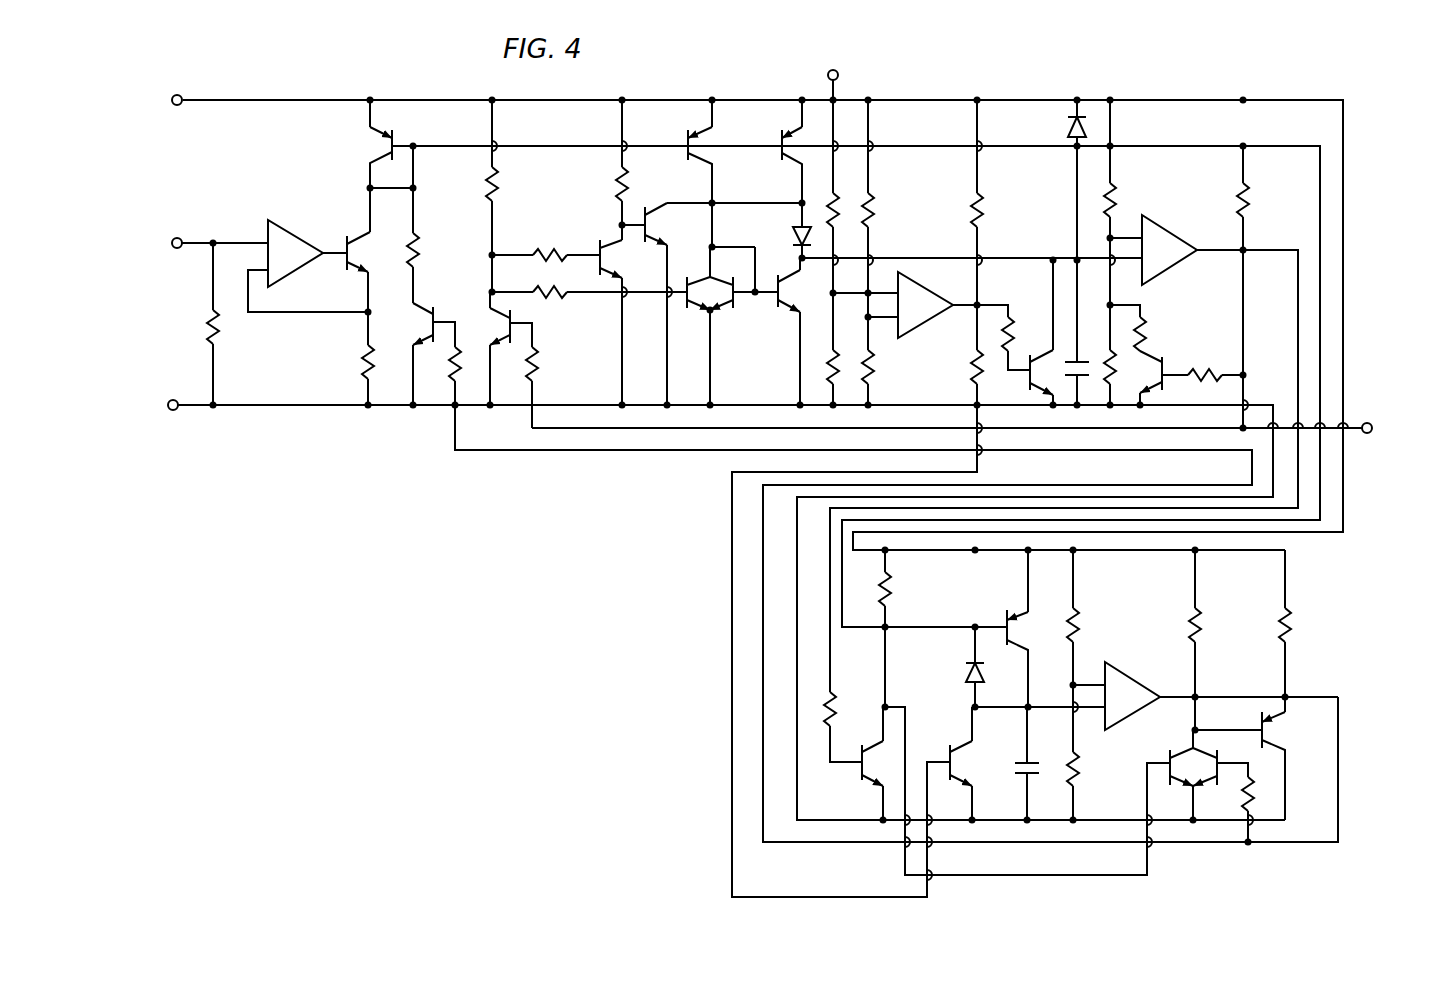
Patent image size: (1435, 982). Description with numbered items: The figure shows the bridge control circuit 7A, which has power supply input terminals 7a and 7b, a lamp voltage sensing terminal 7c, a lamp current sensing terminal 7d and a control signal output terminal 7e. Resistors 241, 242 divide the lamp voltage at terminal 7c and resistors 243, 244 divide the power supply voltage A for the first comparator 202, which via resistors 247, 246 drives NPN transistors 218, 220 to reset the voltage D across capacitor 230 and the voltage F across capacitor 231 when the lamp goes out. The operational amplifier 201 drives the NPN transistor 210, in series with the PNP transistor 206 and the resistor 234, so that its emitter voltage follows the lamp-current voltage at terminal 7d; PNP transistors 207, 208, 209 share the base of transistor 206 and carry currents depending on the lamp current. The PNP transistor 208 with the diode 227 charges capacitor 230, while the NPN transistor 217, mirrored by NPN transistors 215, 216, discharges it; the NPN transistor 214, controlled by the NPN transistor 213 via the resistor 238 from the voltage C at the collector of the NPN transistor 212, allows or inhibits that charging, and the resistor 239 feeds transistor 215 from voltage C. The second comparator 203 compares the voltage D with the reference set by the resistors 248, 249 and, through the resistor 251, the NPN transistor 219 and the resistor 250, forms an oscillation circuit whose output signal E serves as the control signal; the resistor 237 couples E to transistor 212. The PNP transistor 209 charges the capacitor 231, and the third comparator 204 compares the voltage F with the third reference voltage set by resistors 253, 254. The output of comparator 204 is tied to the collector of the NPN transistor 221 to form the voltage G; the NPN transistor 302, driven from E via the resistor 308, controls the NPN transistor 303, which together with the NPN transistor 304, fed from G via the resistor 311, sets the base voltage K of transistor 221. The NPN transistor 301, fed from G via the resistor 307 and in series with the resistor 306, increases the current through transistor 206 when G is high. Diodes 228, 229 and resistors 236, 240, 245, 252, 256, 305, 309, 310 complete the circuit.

The power supply input terminal 7a is at (176, 94).
The power supply input terminal 7b is at (172, 399).
The lamp voltage sensing terminal 7c is at (841, 76).
The lamp current sensing terminal 7d is at (176, 239).
The control signal output terminal 7e is at (1366, 419).
The bridge control circuit 7A is at (1046, 87).
The power supply voltage A is at (303, 94).
The voltage at collector of NPN transistor 212 C is at (496, 292).
The voltage across capacitor 230 D is at (1053, 259).
The output signal of second comparator E is at (1250, 247).
The voltage across capacitor 231 F is at (1033, 700).
The voltage at junction of third comparator output and collector of transistor 221 G is at (1292, 697).
The base voltage of NPN transistor 221 K is at (1202, 721).
The operational amplifier 201 is at (294, 223).
The first comparator 202 is at (928, 272).
The second comparator 203 is at (1181, 228).
The third comparator 204 is at (1137, 677).
The PNP transistor 206 is at (400, 121).
The PNP transistor 207 is at (678, 128).
The PNP transistor 208 is at (772, 128).
The PNP transistor 209 is at (1003, 610).
The NPN transistor 210 is at (338, 242).
The NPN transistor 212 is at (505, 350).
The NPN transistor 213 is at (592, 246).
The NPN transistor 214 is at (652, 207).
The NPN transistor 215 is at (689, 317).
The NPN transistor 216 is at (724, 318).
The NPN transistor 217 is at (773, 327).
The NPN transistor 218 is at (1024, 380).
The NPN transistor 219 is at (1170, 364).
The NPN transistor 220 is at (942, 743).
The NPN transistor 221 is at (1278, 742).
The diode 227 is at (790, 234).
The diode 228 is at (1063, 131).
The diode 229 is at (961, 667).
The capacitor 230 is at (1077, 383).
The capacitor 231 is at (1011, 756).
The resistor 234 is at (349, 367).
The resistor 236 is at (501, 192).
The resistor 237 is at (545, 364).
The resistor 238 is at (530, 250).
The resistor 239 is at (552, 312).
The resistor 240 is at (612, 180).
The resistor 241 is at (840, 195).
The resistor 242 is at (843, 380).
The resistor 243 is at (876, 213).
The resistor 244 is at (872, 366).
The resistor 245 is at (985, 215).
The resistor 246 is at (954, 359).
The resistor 247 is at (1020, 325).
The resistor 248 is at (1121, 194).
The resistor 249 is at (1118, 385).
The resistor 250 is at (1157, 319).
The resistor 251 is at (1210, 368).
The resistor 252 is at (1259, 197).
The resistor 253 is at (1081, 611).
The resistor 254 is at (1076, 763).
The resistor 256 is at (1301, 613).
The NPN transistor 301 is at (430, 342).
The NPN transistor 302 is at (857, 771).
The NPN transistor 303 is at (1172, 790).
The NPN transistor 304 is at (1213, 790).
The resistor 305 is at (220, 348).
The resistor 306 is at (432, 244).
The resistor 307 is at (457, 344).
The resistor 308 is at (845, 699).
The resistor 309 is at (901, 591).
The resistor 310 is at (1211, 613).
The resistor 311 is at (1264, 796).